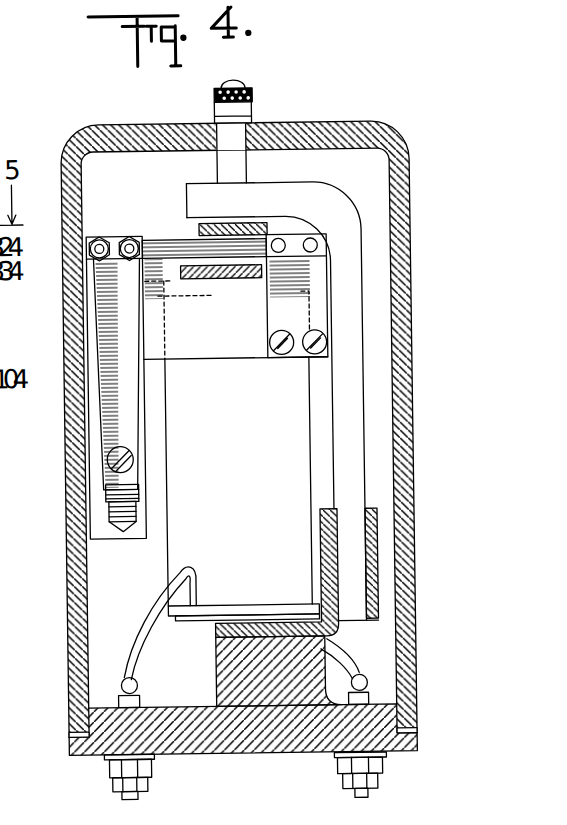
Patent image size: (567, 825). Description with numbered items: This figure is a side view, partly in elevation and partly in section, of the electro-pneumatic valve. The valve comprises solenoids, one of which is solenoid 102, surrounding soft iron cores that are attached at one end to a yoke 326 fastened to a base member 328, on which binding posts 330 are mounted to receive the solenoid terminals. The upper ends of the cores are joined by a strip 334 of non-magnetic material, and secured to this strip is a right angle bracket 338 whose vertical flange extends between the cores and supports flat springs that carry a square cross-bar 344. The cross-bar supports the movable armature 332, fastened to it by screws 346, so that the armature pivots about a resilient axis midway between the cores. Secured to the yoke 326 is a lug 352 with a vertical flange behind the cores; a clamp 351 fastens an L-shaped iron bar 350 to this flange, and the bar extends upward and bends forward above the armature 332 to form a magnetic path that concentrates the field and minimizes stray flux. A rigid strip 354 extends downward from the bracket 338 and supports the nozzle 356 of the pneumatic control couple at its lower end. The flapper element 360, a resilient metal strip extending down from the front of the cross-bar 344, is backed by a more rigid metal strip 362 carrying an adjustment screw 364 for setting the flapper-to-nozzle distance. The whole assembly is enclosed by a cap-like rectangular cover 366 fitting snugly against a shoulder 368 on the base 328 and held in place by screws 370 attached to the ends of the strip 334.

The solenoid 102 is at (218, 579).
The yoke 326 is at (272, 641).
The base member 328 is at (230, 735).
The binding posts 330 is at (104, 776).
The armature 332 is at (276, 229).
The strip 334 is at (215, 283).
The right angle bracket 338 is at (178, 335).
The cross-bar 344 is at (182, 247).
The screws 346 is at (222, 247).
The L-shaped iron bar 350 is at (352, 404).
The clamp 351 is at (376, 556).
The lug 352 is at (326, 544).
The rigid strip 354 is at (142, 513).
The nozzle 356 is at (122, 531).
The flapper element 360 is at (140, 490).
The rigid metal strip 362 is at (112, 410).
The adjustment screw 364 is at (110, 458).
The cover 366 is at (378, 129).
The shoulder 368 is at (440, 745).
The screws 370 is at (217, 95).